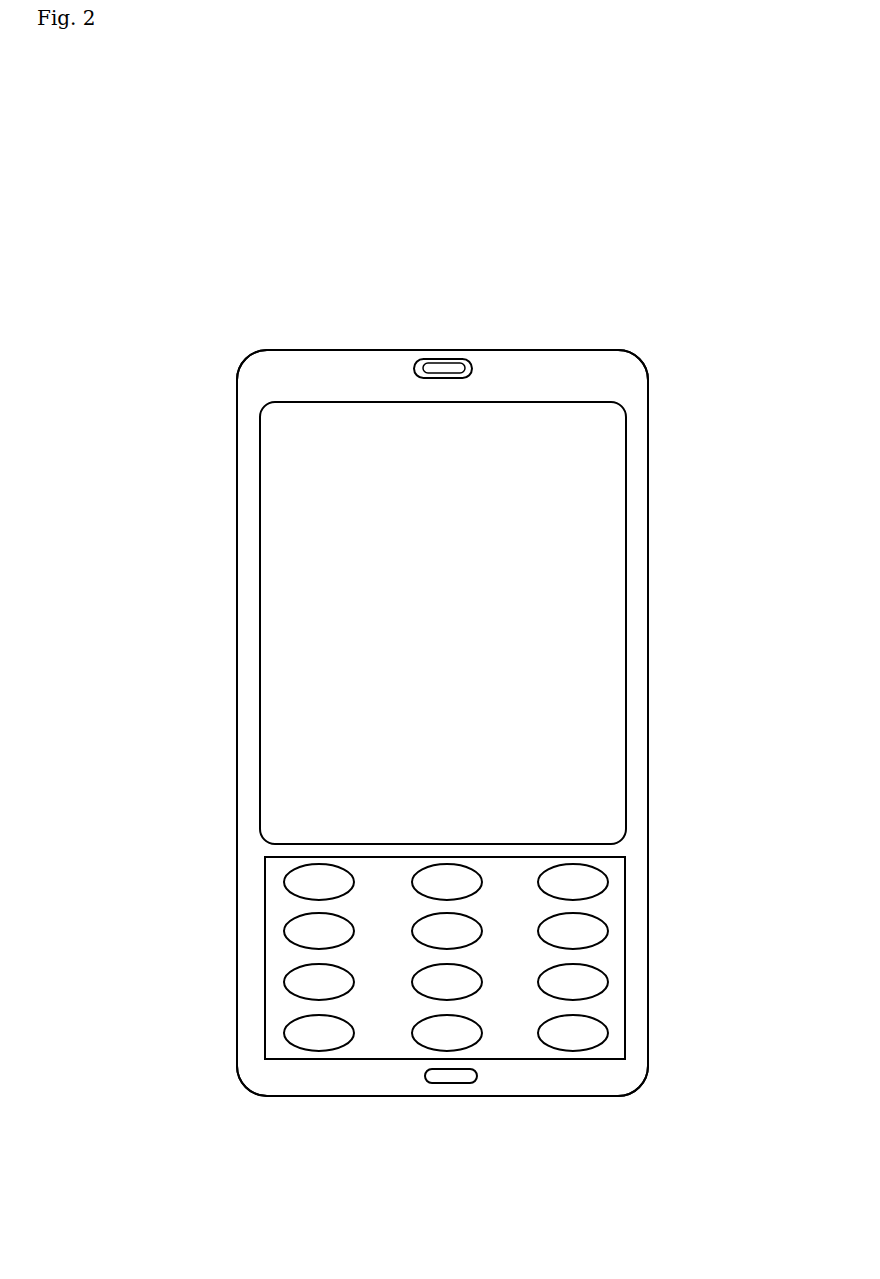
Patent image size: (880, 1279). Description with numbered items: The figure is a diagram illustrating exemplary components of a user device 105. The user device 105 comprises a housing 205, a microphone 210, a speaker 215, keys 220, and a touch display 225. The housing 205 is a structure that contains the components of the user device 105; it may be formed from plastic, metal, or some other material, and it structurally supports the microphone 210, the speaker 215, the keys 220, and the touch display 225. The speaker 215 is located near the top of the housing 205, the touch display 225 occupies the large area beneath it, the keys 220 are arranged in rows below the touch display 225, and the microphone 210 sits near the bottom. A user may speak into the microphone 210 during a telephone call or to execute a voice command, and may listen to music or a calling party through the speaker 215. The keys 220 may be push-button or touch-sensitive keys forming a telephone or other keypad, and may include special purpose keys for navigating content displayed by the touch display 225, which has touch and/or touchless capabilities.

The user device 105 is at (225, 118).
The housing 205 is at (237, 664).
The microphone 210 is at (464, 1083).
The speaker 215 is at (454, 357).
The keys 220 is at (662, 1045).
The touch display 225 is at (612, 605).